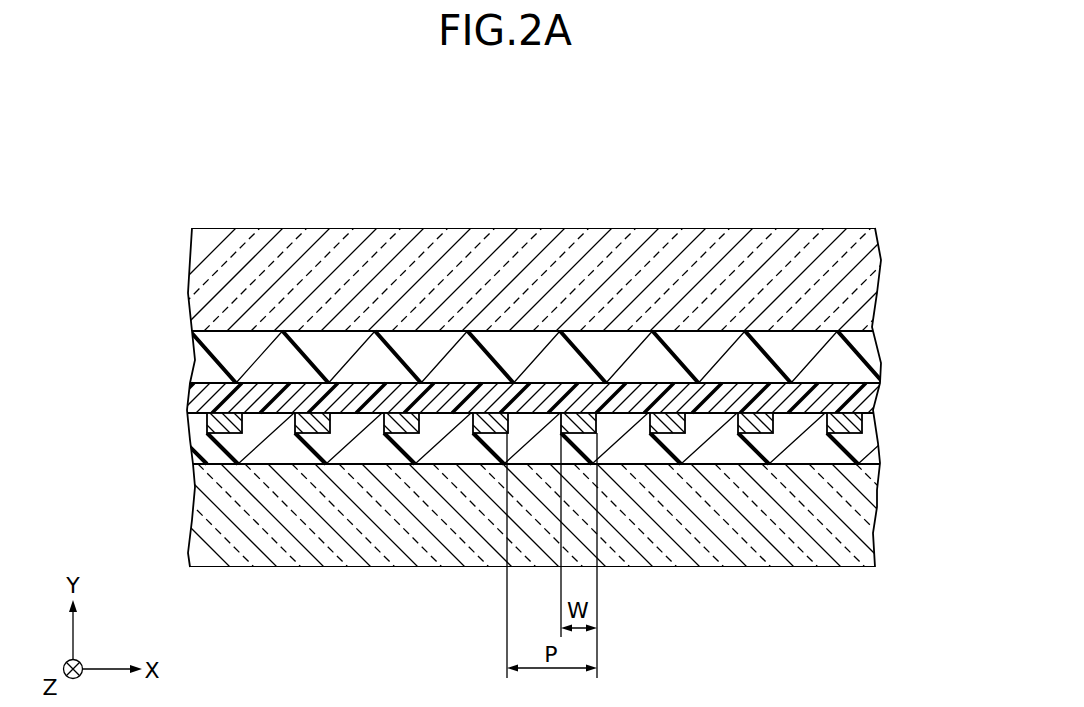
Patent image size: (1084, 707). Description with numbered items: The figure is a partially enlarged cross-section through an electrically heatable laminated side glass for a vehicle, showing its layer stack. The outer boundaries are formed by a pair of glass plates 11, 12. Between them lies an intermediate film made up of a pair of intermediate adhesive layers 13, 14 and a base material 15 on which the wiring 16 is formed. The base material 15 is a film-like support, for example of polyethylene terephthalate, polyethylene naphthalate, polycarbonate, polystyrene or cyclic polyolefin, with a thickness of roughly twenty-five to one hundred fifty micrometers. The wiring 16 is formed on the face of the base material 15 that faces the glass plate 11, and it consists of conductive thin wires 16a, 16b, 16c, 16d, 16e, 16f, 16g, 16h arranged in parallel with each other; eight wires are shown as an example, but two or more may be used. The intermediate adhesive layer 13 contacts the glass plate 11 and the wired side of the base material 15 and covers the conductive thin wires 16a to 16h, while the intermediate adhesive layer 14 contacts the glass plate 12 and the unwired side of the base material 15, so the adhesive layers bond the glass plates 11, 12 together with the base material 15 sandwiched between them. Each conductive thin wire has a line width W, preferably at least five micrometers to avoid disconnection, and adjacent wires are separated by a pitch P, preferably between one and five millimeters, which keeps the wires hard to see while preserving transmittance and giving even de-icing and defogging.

The glass plate 11 is at (857, 514).
The glass plate 12 is at (856, 279).
The intermediate adhesive layer 13 is at (857, 444).
The intermediate adhesive layer 14 is at (858, 358).
The base material 15 is at (863, 398).
The wiring 16 is at (534, 270).
The conductive thin wire 16a is at (224, 421).
The conductive thin wire 16b is at (312, 421).
The conductive thin wire 16c is at (401, 421).
The conductive thin wire 16d is at (490, 421).
The conductive thin wire 16e is at (578, 421).
The conductive thin wire 16f is at (667, 421).
The conductive thin wire 16g is at (755, 421).
The conductive thin wire 16h is at (785, 299).